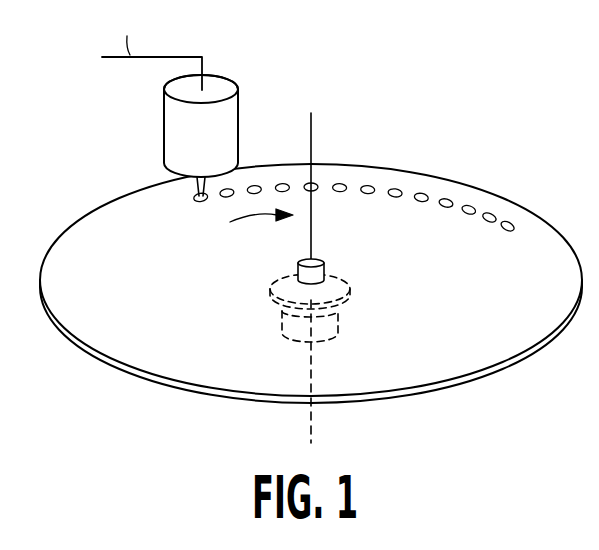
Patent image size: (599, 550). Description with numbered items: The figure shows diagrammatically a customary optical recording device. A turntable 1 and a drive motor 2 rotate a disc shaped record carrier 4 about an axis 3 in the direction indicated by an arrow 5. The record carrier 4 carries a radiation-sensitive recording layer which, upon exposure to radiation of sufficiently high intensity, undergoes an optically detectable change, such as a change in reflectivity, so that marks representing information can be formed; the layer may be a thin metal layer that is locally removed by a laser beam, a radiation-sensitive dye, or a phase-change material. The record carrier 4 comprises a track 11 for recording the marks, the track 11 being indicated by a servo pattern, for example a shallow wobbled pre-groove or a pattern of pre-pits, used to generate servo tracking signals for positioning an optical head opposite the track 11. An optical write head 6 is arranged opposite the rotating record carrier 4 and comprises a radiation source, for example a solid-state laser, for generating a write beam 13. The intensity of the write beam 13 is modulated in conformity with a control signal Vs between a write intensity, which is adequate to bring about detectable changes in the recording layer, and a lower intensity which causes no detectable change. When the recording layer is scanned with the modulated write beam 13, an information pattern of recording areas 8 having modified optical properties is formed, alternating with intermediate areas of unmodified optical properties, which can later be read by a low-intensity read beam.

The turntable 1 is at (351, 287).
The drive motor 2 is at (338, 325).
The axis 3 is at (313, 128).
The disc shaped record carrier 4 is at (455, 362).
The arrow 5 is at (250, 223).
The optical write head 6 is at (238, 108).
The recording areas 8 is at (395, 186).
The track 11 is at (458, 205).
The write beam 13 is at (165, 185).